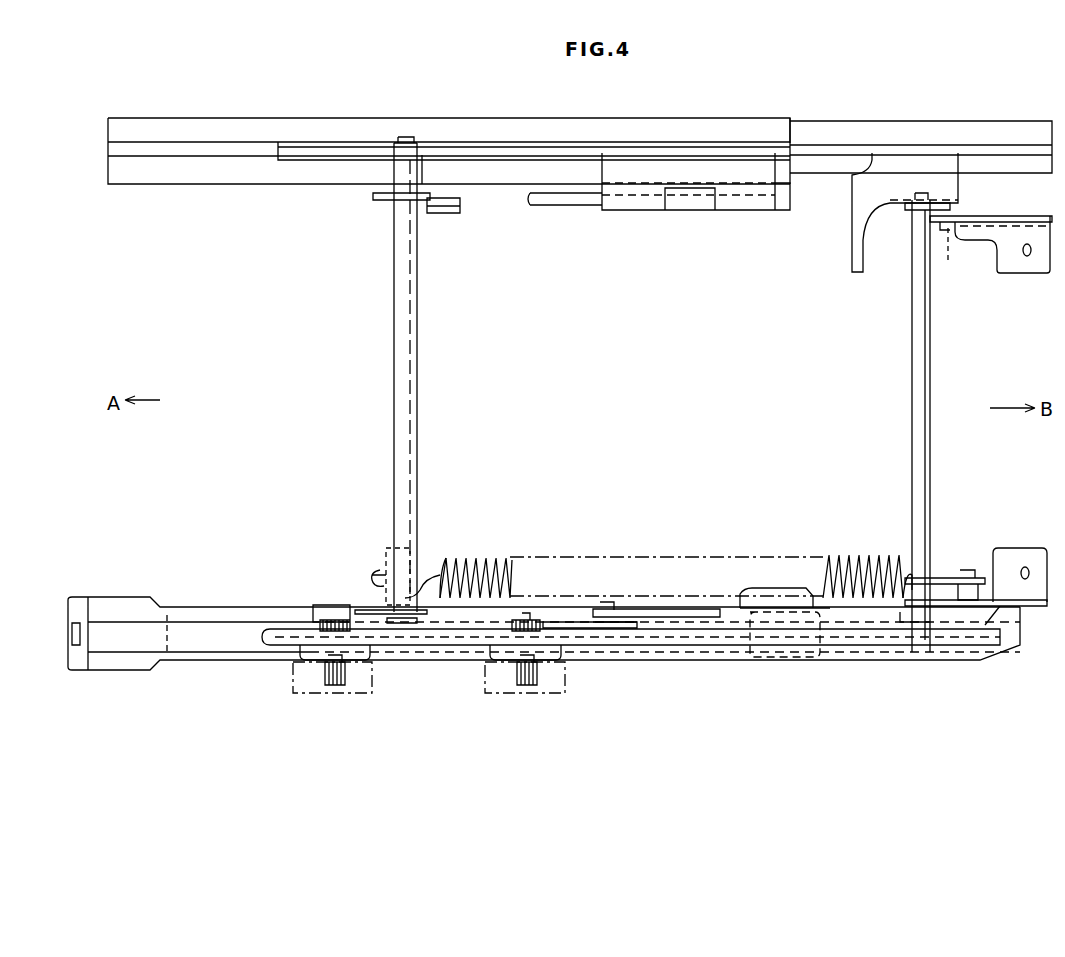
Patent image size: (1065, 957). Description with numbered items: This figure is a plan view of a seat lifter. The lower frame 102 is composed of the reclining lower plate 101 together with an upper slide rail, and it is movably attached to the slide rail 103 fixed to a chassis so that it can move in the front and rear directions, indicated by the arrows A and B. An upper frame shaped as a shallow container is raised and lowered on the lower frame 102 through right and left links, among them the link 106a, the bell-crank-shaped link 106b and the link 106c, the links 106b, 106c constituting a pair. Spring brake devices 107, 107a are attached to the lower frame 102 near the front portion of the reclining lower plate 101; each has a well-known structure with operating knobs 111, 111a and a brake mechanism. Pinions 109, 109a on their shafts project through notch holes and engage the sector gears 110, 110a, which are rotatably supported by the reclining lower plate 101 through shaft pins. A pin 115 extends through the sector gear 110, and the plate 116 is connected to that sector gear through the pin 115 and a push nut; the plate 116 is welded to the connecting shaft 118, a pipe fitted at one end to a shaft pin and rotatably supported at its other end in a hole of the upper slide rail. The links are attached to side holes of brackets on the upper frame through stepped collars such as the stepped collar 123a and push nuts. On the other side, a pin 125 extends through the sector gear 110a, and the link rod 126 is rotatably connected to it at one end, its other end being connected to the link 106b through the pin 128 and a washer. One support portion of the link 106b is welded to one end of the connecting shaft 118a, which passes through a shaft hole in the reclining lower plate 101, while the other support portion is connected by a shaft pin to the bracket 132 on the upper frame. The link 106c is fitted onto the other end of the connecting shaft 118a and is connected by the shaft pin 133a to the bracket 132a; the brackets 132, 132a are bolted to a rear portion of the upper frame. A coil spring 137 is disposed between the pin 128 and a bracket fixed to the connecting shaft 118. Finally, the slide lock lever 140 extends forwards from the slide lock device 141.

The reclining lower plate 101 is at (607, 141).
The lower frame 102 is at (665, 141).
The slide rail 103 is at (930, 120).
The link 106a is at (380, 203).
The link 106b is at (1000, 604).
The link 106c is at (988, 212).
The spring brake device 107 is at (300, 670).
The spring brake device 107a is at (505, 655).
The pinion 109 is at (300, 628).
The pinion 109a is at (540, 618).
The sector gear 110 is at (400, 645).
The sector gear 110a is at (630, 645).
The operating knob 111 is at (360, 692).
The operating knob 111a is at (568, 690).
The pin 115 is at (367, 597).
The plate 116 is at (335, 603).
The connecting shaft 118 is at (418, 327).
The connecting shaft 118a is at (932, 364).
The stepped collar 123a is at (460, 212).
The pin 125 is at (608, 600).
The link rod 126 is at (865, 622).
The pin 128 is at (967, 576).
The bracket 132 is at (1025, 547).
The bracket 132a is at (1025, 272).
The shaft pin 133a is at (956, 250).
The coil spring 137 is at (483, 553).
The slide lock lever 140 is at (700, 207).
The slide lock device 141 is at (640, 212).